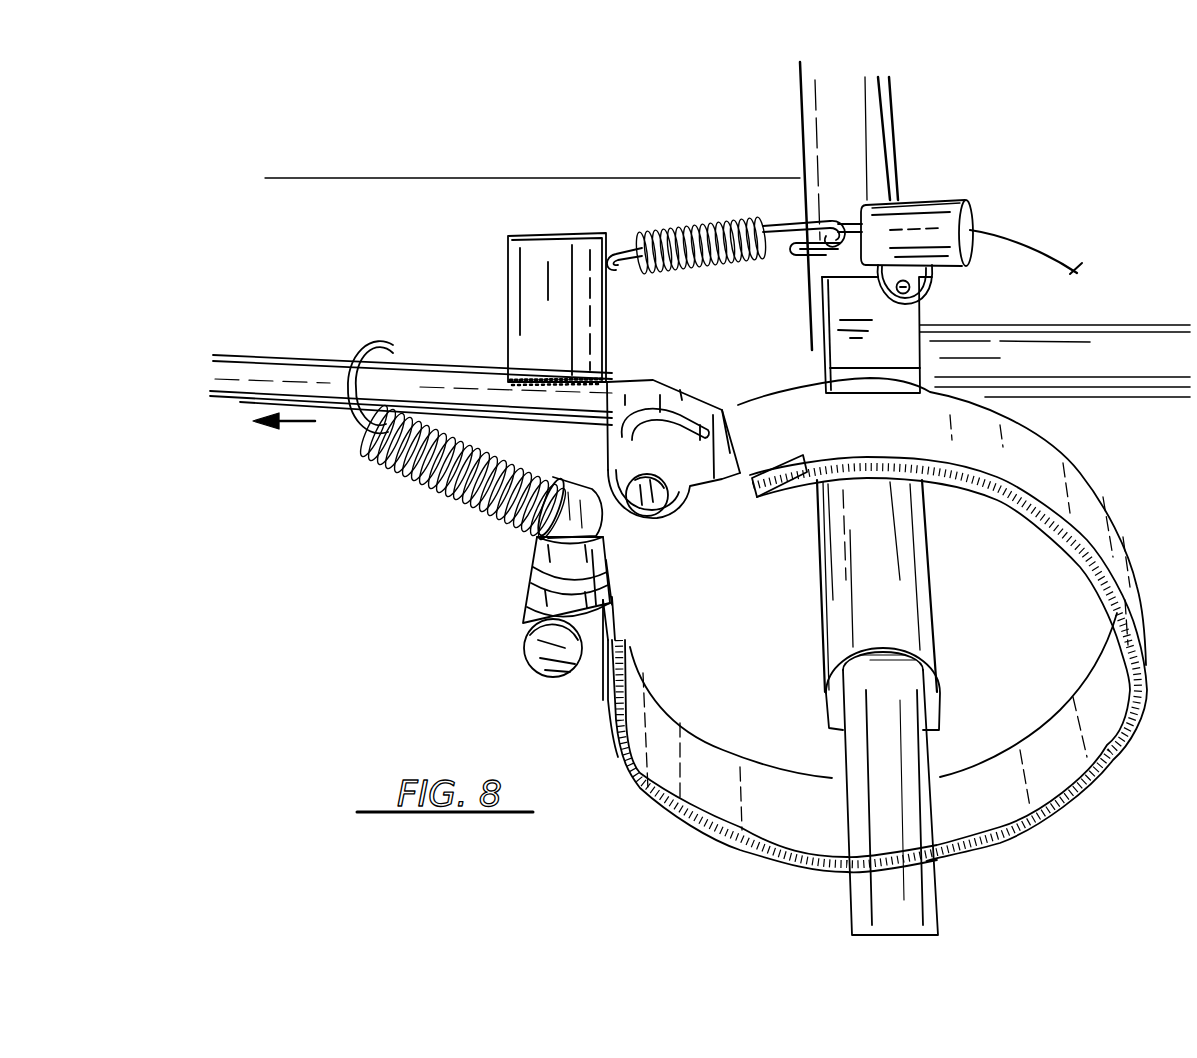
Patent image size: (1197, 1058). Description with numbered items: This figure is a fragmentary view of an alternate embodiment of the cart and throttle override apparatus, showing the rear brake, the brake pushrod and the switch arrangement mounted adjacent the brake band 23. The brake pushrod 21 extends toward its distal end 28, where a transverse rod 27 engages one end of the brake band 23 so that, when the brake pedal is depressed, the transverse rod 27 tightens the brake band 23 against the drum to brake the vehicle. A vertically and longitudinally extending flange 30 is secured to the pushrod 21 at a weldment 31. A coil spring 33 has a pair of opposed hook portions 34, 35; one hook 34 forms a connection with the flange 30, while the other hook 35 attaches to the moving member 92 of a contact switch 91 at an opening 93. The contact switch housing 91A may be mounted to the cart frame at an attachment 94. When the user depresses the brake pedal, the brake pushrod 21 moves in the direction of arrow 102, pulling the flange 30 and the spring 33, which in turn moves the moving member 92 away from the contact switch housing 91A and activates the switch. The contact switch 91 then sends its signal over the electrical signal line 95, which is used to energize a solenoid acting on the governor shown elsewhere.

The brake pushrod 21 is at (287, 353).
The arrow 102 is at (308, 424).
The brake band 23 is at (1035, 459).
The transverse rod 27 is at (657, 517).
The distal end 28 is at (622, 385).
The flange 30 is at (537, 262).
The weldment 31 is at (545, 378).
The coil spring 33 is at (717, 224).
The hook 34 is at (620, 275).
The hook 35 is at (793, 250).
The contact switch 91 is at (960, 200).
The contact switch housing 91A is at (918, 207).
The moving member 92 is at (850, 238).
The opening 93 is at (810, 263).
The attachment 94 is at (912, 287).
The electrical signal line 95 is at (1040, 248).